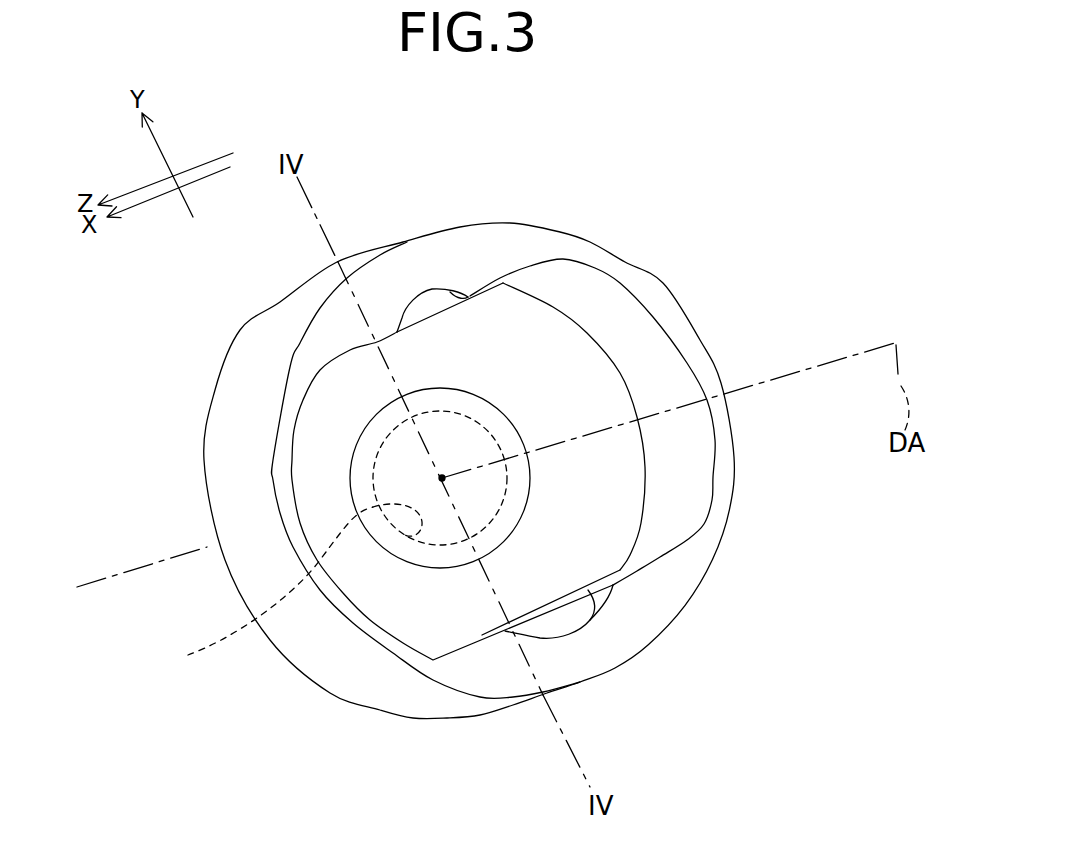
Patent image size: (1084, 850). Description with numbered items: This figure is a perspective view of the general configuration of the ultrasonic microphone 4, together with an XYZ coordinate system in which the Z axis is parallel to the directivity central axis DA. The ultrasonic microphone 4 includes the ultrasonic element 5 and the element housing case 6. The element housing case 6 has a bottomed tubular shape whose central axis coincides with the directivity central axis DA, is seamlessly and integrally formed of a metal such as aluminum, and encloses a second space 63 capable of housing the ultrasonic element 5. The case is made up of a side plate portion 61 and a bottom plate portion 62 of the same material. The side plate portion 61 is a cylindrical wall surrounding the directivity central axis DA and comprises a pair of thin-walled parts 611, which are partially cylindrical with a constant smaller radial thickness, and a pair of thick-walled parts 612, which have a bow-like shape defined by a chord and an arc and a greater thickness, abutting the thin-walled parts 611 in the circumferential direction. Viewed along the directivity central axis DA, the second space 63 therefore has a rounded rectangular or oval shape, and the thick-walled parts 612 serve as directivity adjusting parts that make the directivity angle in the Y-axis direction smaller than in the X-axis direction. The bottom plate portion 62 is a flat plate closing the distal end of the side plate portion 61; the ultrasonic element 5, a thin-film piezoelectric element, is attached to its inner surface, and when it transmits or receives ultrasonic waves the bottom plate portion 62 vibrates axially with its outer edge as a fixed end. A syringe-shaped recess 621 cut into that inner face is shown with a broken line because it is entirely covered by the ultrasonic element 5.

The ultrasonic microphone 4 is at (796, 210).
The ultrasonic element 5 is at (365, 470).
The element housing case 6 is at (265, 302).
The side plate portion 61 is at (722, 397).
The thin-walled part 611 is at (638, 291).
The thick-walled part 612 is at (473, 253).
The bottom plate portion 62 is at (389, 407).
The recess 621 is at (277, 587).
The second space 63 is at (622, 513).